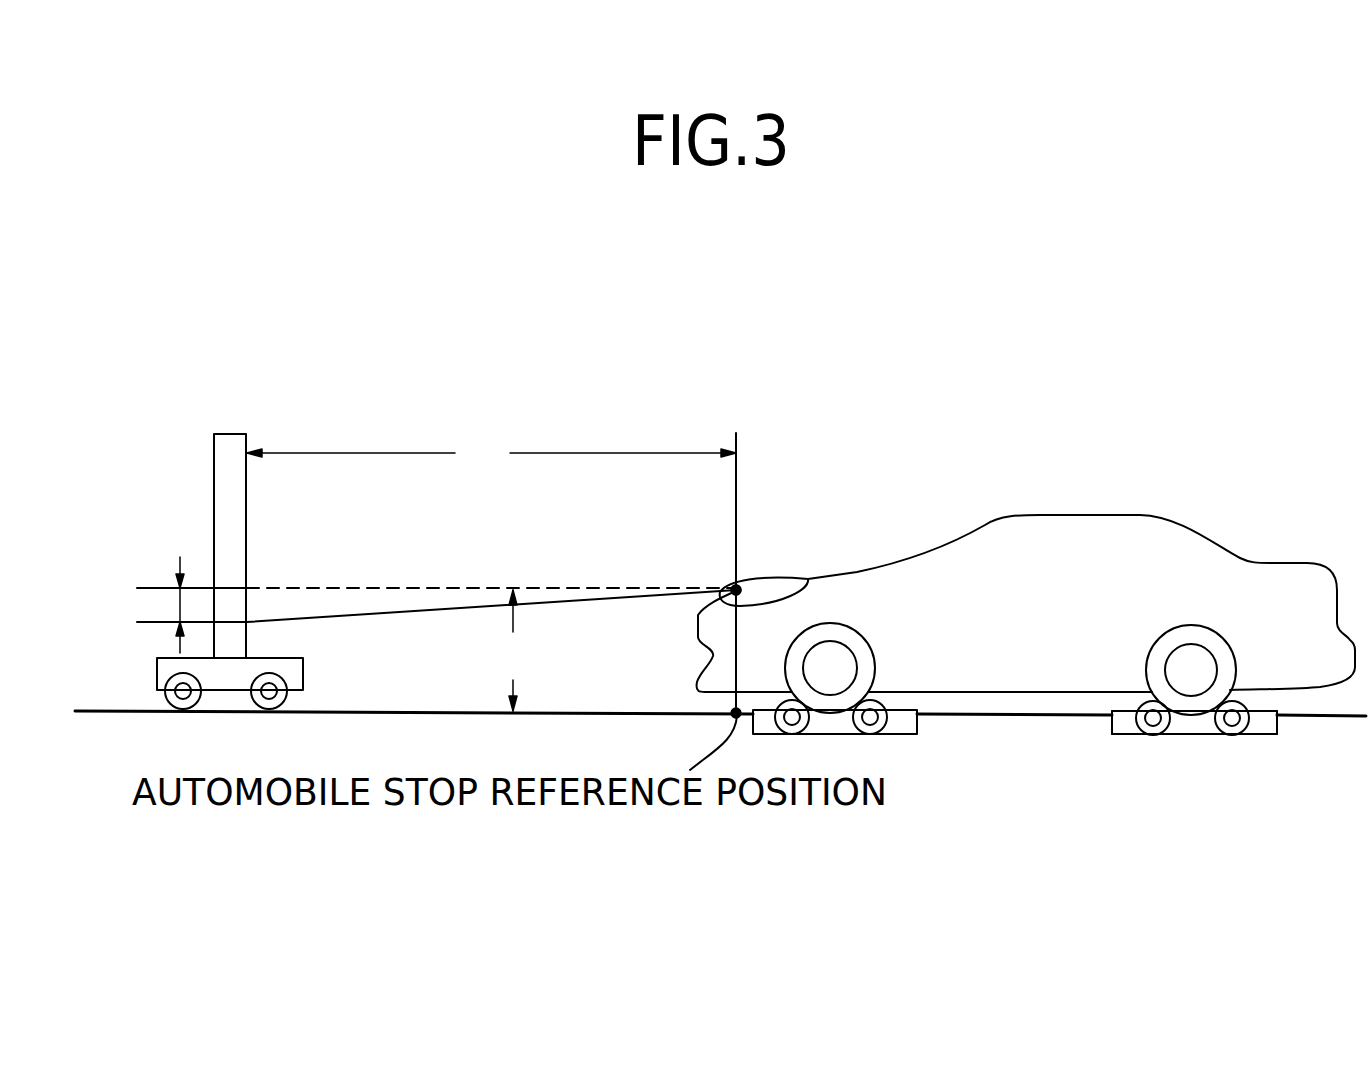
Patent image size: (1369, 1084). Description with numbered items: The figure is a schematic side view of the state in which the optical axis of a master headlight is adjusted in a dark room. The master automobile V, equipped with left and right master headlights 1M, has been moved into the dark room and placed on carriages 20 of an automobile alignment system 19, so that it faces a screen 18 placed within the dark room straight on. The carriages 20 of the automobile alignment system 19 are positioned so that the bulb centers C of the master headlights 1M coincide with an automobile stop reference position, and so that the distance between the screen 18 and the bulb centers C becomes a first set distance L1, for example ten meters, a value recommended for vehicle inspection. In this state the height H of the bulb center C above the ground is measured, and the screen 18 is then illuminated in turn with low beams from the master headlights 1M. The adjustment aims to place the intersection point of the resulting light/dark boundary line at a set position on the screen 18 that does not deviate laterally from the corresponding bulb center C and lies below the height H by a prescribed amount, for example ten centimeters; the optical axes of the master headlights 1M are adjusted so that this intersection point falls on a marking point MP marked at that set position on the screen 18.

The screen 18 is at (228, 443).
The marking point MP is at (247, 624).
The first set distance L1 is at (491, 449).
The height of the bulb center H is at (515, 650).
The bulb center C is at (736, 590).
The master automobile V is at (1030, 522).
The master headlight 1M is at (775, 585).
The carriage 20 is at (1112, 720).
The automobile alignment system 19 is at (1138, 736).